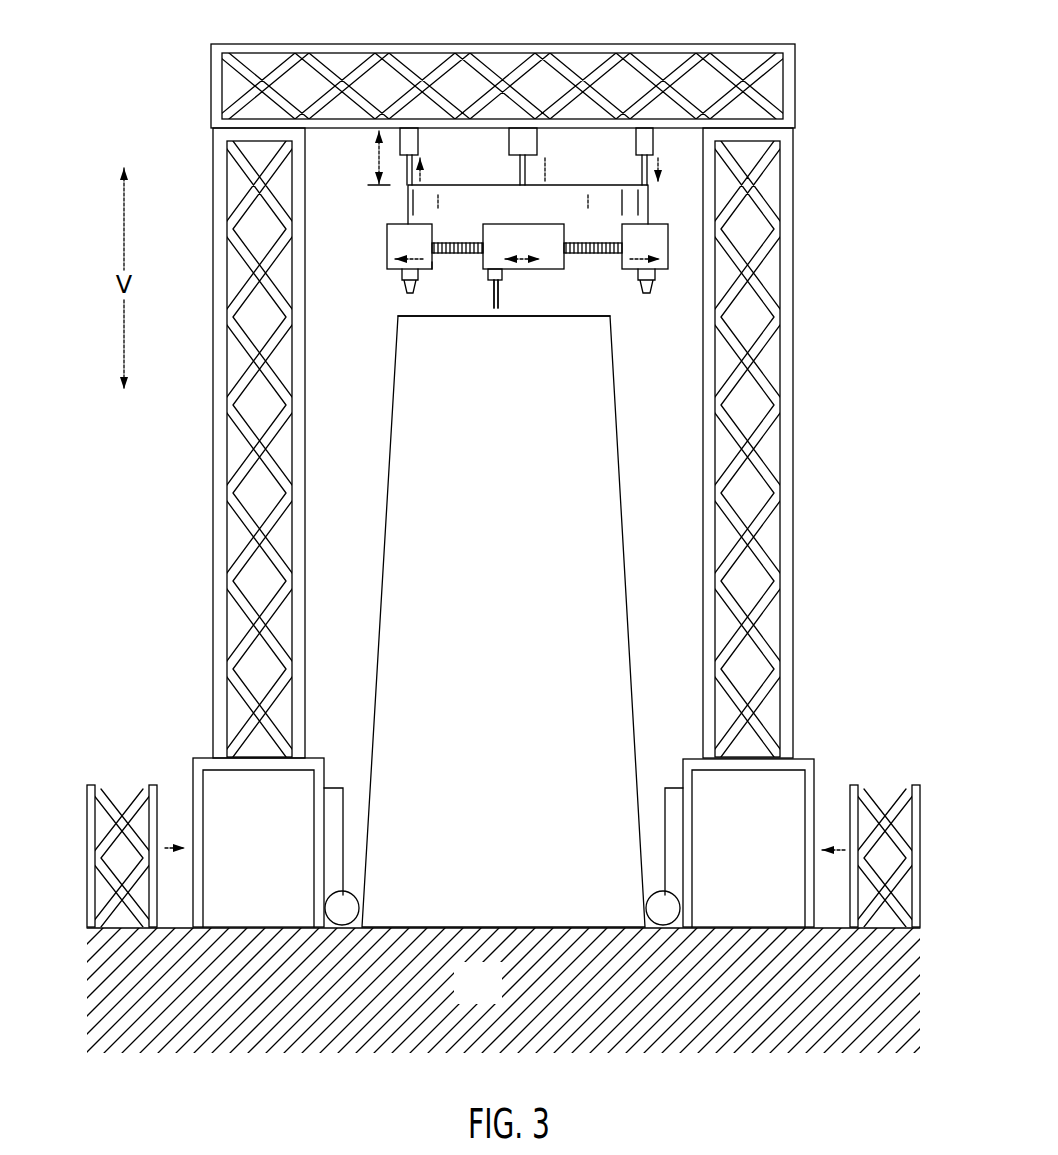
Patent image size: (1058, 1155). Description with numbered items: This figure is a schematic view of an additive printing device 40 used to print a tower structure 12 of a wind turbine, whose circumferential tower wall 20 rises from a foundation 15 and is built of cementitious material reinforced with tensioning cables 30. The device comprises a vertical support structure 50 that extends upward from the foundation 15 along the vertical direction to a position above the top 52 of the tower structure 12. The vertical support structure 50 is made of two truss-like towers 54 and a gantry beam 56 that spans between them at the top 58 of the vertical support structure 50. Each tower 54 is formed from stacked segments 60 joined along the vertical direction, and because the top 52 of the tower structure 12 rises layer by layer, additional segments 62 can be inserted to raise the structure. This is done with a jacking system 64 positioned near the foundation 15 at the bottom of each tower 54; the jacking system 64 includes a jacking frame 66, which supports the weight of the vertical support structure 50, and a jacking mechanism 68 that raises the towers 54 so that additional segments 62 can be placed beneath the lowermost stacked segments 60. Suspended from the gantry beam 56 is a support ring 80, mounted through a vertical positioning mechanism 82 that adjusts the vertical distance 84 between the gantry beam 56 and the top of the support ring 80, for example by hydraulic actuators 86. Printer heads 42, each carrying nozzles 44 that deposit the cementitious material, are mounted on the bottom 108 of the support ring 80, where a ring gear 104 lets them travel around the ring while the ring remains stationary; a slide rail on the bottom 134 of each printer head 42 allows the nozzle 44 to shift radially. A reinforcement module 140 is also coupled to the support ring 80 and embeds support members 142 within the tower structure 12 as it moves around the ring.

The tower structure 12 is at (362, 505).
The foundation 15 is at (519, 990).
The circumferential tower wall 20 is at (503, 621).
The tensioning cables 30 is at (501, 288).
The additive printing device 40 is at (838, 78).
The printer heads 42 is at (387, 248).
The nozzles 44 is at (402, 288).
The vertical support structure 50 is at (797, 162).
The top of tower structure 52 is at (398, 316).
The towers 54 is at (797, 302).
The gantry beam 56 is at (578, 53).
The top of vertical support structure 58 is at (210, 48).
The stacked segments 60 is at (213, 655).
The additional segments 62 is at (90, 808).
The jacking system 64 is at (165, 770).
The jacking frame 66 is at (205, 842).
The jacking mechanism 68 is at (655, 897).
The support ring 80 is at (528, 203).
The vertical positioning mechanism 82 is at (509, 140).
The vertical distance 84 is at (377, 165).
The hydraulic actuators 86 is at (537, 145).
The ring gear 104 is at (590, 257).
The bottom of support ring 108 is at (458, 258).
The bottom of printer head 134 is at (430, 273).
The reinforcement module 140 is at (549, 262).
The support members 142 is at (492, 290).